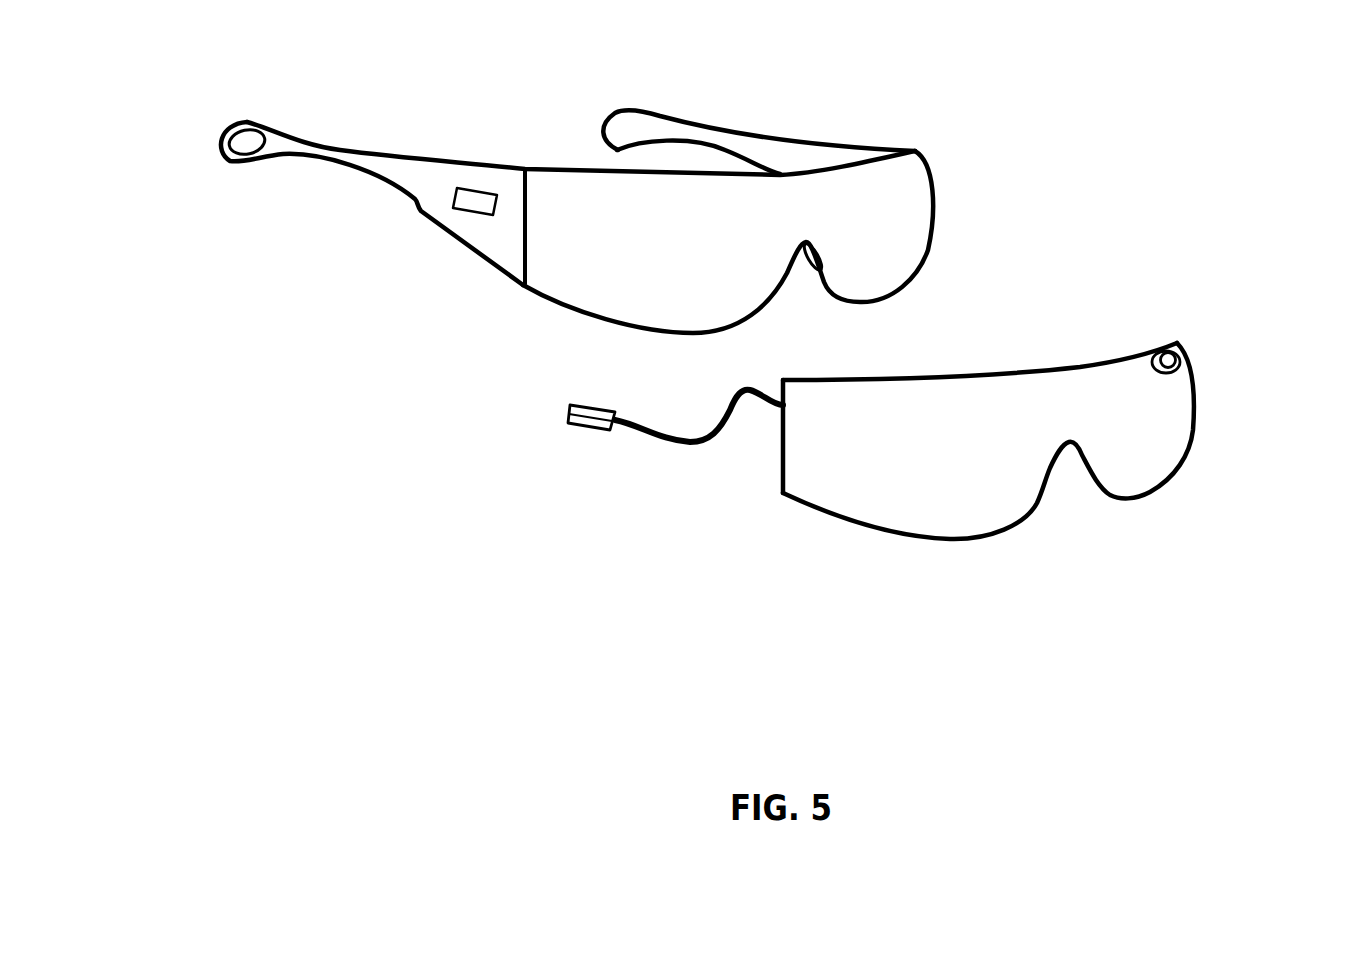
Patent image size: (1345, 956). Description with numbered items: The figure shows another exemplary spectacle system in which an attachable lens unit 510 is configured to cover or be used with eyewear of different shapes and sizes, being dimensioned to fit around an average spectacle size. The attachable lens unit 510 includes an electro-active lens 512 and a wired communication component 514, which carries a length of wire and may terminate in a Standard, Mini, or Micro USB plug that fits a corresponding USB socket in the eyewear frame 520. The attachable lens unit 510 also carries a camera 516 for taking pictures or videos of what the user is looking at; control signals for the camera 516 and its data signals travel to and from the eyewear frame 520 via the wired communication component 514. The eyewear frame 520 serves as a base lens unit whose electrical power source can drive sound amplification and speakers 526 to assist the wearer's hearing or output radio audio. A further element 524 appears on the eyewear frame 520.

The eyewear assembly 510 is at (938, 435).
The lens 512 is at (988, 441).
The cable with connector 514 is at (700, 443).
The sensor 516 is at (1182, 343).
The eyewear assembly 520 is at (530, 220).
The sensor 524 is at (470, 213).
The ear-tip sensor 526 is at (247, 142).